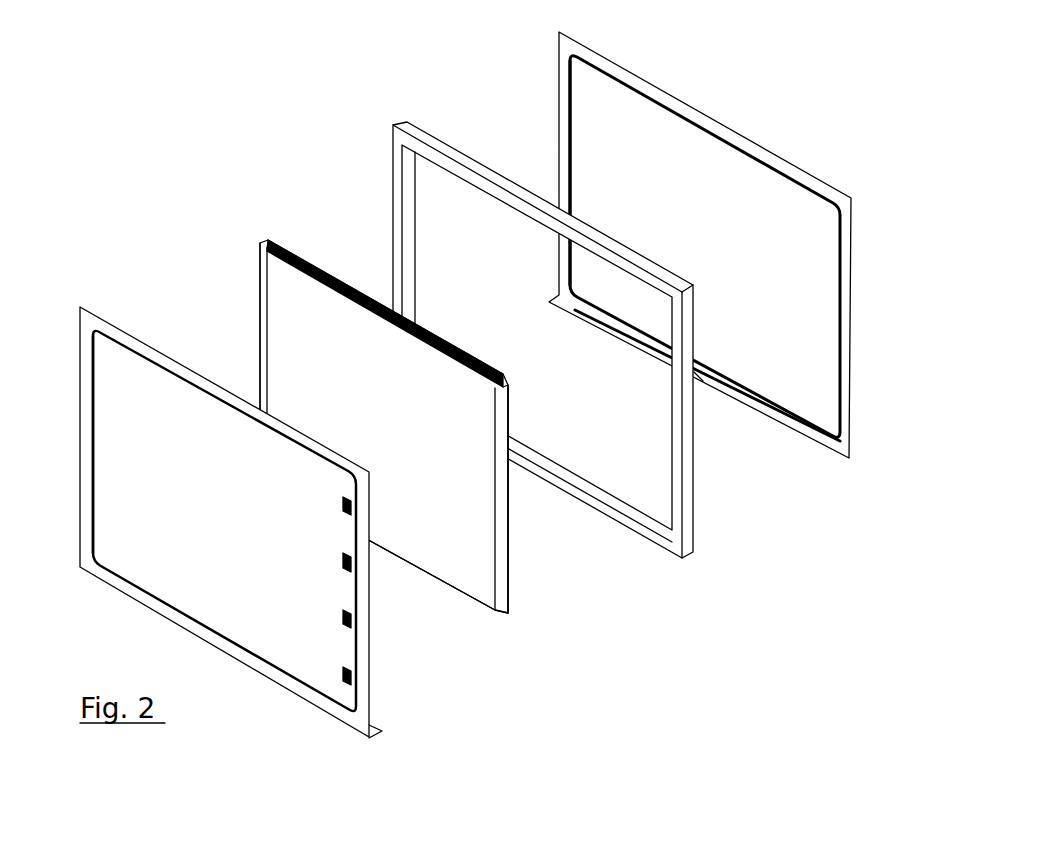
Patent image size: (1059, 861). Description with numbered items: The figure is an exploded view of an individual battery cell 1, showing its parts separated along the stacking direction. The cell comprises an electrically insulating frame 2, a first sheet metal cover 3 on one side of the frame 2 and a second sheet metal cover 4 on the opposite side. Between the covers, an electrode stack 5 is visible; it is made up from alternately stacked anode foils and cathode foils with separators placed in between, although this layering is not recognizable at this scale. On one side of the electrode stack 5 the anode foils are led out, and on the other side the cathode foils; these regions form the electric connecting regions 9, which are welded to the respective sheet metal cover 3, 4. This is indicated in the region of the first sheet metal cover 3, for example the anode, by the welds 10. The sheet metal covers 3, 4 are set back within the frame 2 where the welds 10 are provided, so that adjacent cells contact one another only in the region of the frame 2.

The individual battery cell 1 is at (328, 127).
The electrically insulating frame 2 is at (693, 530).
The first sheet metal cover 3 is at (122, 378).
The second sheet metal cover 4 is at (812, 367).
The electrode stack 5 is at (302, 293).
The electric connecting regions 9 is at (260, 318).
The welds 10 is at (351, 510).